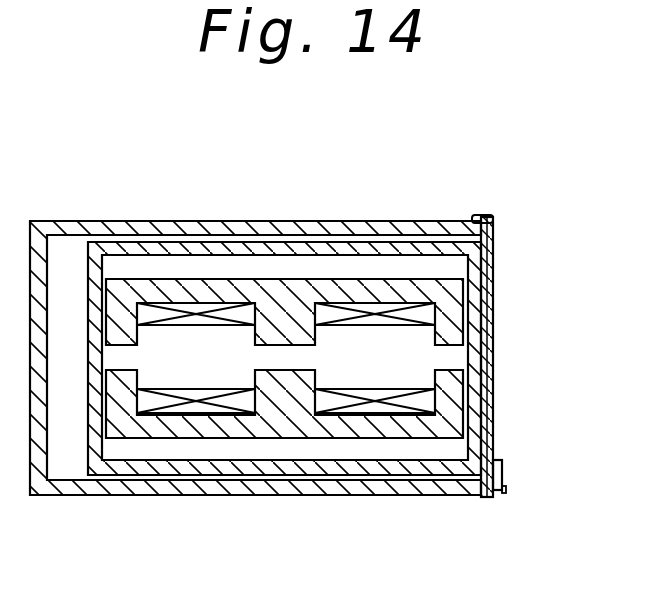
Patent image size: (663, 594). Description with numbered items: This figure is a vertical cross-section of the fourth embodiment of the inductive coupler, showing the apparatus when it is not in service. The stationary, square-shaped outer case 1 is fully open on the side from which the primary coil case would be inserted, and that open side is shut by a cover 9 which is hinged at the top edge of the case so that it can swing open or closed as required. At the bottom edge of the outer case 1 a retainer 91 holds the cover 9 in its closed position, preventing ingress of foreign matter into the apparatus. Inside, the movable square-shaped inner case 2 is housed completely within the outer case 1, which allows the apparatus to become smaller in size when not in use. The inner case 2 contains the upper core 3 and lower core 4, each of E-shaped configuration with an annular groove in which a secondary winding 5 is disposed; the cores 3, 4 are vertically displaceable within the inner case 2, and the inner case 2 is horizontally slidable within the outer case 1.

The outer case 1 is at (73, 487).
The inner case 2 is at (178, 468).
The upper core 3 is at (282, 333).
The lower core 4 is at (280, 425).
The secondary winding 5 is at (200, 316).
The cover 9 is at (485, 338).
The retainer 91 is at (496, 470).